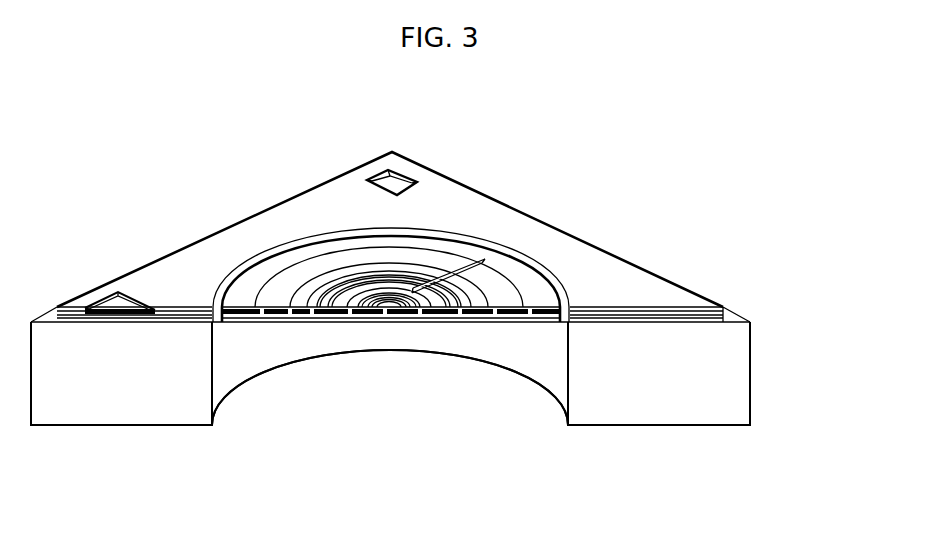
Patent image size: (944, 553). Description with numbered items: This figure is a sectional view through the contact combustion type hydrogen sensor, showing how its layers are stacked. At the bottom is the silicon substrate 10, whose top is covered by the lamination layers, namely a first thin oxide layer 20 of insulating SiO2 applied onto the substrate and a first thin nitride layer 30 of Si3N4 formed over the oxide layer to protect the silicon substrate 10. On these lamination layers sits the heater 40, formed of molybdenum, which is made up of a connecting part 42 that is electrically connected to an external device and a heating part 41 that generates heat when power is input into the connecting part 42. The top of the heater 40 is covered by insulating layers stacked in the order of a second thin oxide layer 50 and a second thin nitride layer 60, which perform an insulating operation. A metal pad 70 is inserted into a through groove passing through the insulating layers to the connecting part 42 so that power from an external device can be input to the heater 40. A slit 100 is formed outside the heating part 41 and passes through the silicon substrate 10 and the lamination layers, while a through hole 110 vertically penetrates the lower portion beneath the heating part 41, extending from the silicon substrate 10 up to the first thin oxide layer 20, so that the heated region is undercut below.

The silicon substrate 10 is at (752, 378).
The first thin oxide layer 20 is at (750, 322).
The first thin nitride layer 30 is at (725, 316).
The heater 40 is at (439, 348).
The heating part 41 is at (533, 308).
The connecting part 42 is at (118, 310).
The second thin oxide layer 50 is at (724, 311).
The second thin nitride layer 60 is at (723, 307).
The metal pad 70 is at (115, 295).
The slit 100 is at (510, 250).
The through hole 110 is at (412, 397).